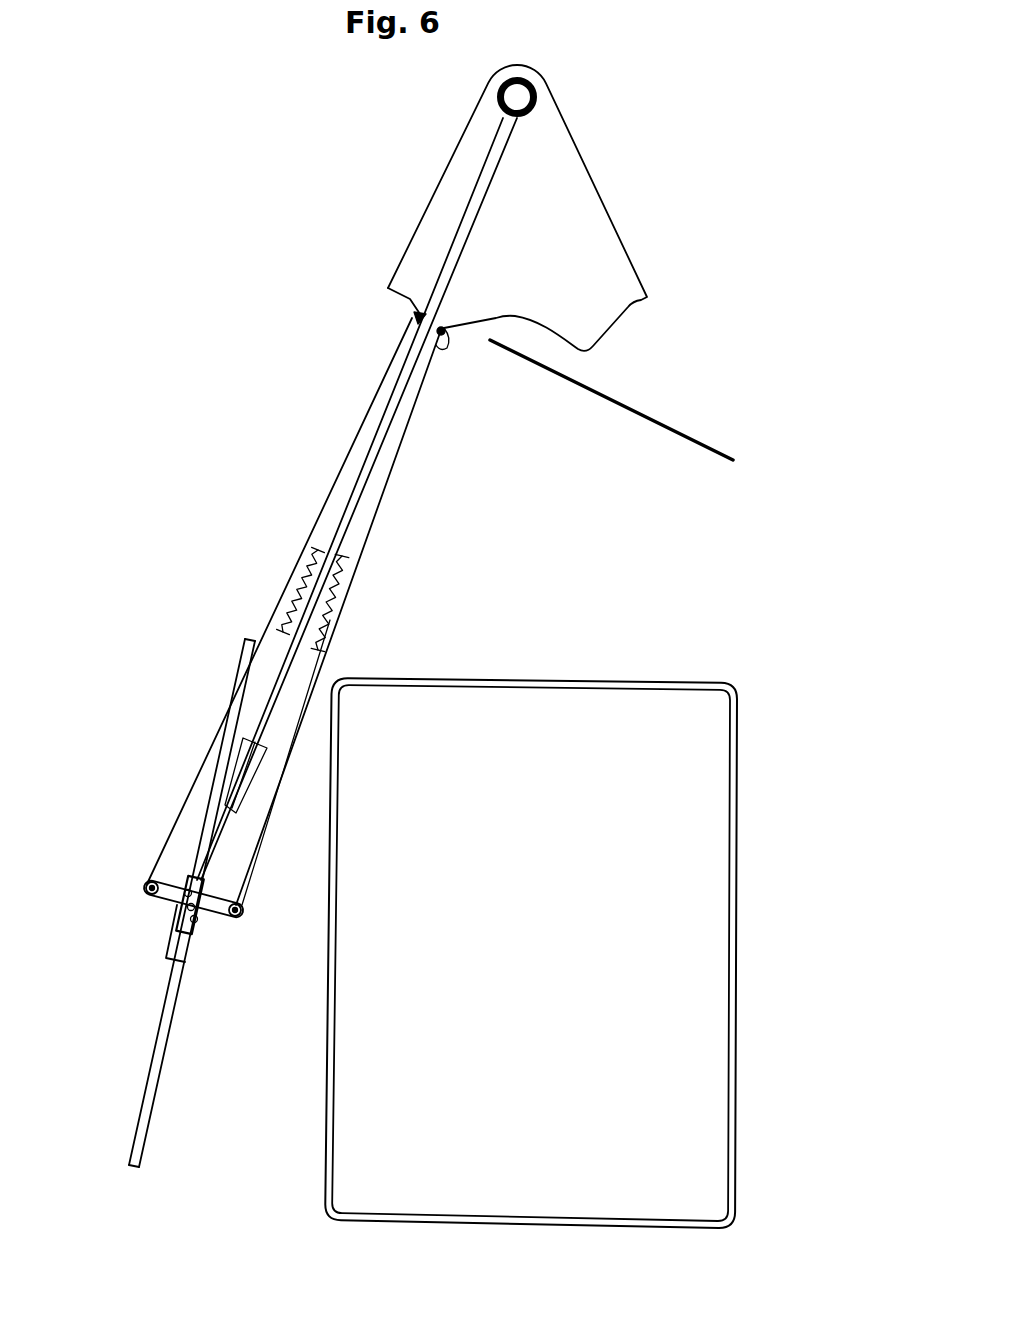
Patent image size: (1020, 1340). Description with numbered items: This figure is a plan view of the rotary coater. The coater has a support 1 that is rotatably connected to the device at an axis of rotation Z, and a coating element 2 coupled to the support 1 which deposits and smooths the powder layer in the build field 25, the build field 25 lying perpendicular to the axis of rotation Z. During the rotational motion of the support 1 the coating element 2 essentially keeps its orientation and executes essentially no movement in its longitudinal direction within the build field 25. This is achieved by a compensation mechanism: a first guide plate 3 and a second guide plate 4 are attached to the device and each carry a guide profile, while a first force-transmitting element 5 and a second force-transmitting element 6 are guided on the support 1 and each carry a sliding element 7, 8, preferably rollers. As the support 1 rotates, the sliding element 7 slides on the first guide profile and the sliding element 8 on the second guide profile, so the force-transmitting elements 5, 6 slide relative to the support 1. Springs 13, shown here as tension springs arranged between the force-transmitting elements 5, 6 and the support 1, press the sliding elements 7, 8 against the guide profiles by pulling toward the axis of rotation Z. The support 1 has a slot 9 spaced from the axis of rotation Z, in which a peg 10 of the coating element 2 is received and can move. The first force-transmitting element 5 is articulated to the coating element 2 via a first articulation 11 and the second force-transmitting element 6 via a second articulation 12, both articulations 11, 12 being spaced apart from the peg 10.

The support 1 is at (468, 197).
The coating element 2 is at (147, 1104).
The first guide plate 3 is at (623, 408).
The second guide plate 4 is at (583, 227).
The first force-transmitting element 5 is at (363, 411).
The second force-transmitting element 6 is at (380, 504).
The sliding element 7 is at (412, 317).
The sliding element 8 is at (447, 333).
The slot 9 is at (193, 923).
The peg 10 is at (183, 908).
The first articulation 11 is at (150, 884).
The second articulation 12 is at (243, 906).
The springs 13 is at (305, 580).
The build field 25 is at (548, 766).
The axis of rotation Z is at (520, 96).